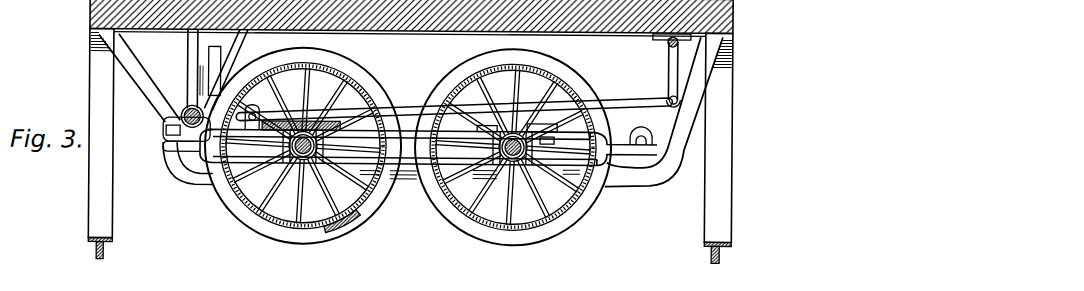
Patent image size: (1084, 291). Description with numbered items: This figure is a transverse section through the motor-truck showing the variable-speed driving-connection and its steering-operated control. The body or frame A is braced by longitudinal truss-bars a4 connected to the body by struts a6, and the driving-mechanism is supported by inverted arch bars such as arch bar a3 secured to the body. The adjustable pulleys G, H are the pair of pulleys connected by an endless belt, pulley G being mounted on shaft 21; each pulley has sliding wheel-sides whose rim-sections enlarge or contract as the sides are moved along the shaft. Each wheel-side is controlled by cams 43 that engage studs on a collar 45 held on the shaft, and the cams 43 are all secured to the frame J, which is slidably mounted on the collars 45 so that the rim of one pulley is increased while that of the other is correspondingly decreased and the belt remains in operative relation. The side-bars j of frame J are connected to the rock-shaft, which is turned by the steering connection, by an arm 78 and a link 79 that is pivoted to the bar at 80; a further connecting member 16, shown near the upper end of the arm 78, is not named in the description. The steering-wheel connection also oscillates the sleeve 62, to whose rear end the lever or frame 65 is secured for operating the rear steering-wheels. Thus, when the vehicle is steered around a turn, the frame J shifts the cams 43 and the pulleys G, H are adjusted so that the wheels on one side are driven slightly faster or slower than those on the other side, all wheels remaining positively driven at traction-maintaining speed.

The body or frame A is at (723, 14).
The struts a6 is at (755, 180).
The longitudinal truss-bars a4 is at (108, 250).
The inverted arch bar a3 is at (633, 175).
The frame J is at (593, 138).
The side-bars j is at (603, 171).
The sleeve 62 is at (170, 114).
The link 79 is at (407, 107).
The pivot 80 is at (247, 107).
The lever or frame 65 is at (183, 86).
The hanger link 16 is at (668, 43).
The arm 78 is at (675, 70).
The adjustable pulley H is at (328, 232).
The adjustable pulley G is at (473, 225).
The collar 45 is at (293, 155).
The shaft 21 is at (513, 155).
The cam 43 is at (540, 144).